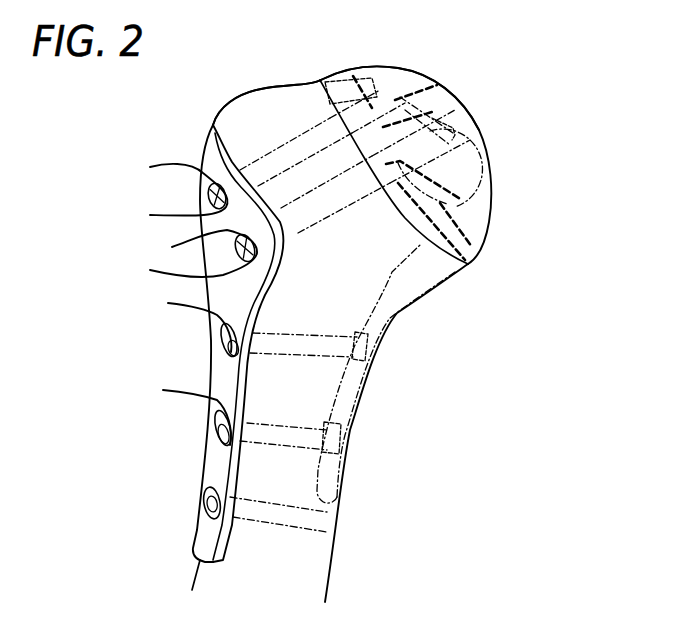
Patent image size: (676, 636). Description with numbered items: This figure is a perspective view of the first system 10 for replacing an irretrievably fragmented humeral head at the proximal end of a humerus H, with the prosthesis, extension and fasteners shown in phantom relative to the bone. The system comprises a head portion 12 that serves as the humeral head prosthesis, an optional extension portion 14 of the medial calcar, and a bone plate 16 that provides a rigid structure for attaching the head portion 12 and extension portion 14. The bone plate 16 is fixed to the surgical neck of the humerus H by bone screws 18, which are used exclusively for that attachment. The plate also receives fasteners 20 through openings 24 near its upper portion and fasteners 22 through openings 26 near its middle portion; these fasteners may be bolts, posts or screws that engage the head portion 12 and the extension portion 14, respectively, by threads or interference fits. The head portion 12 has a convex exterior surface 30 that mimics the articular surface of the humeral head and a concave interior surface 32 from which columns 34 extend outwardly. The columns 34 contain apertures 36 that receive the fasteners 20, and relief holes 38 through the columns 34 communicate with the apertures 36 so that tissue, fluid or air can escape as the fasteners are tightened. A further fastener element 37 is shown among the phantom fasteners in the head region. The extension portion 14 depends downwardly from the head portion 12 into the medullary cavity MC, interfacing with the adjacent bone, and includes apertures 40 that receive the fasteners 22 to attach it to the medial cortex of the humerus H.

The first system 10 is at (431, 69).
The head portion 12 is at (498, 174).
The extension portion 14 is at (352, 473).
The bone plate 16 is at (205, 369).
The bone screws 18 is at (210, 498).
The fasteners 20 is at (152, 215).
The fasteners 22 is at (224, 340).
The openings 24 is at (192, 218).
The openings 26 is at (183, 367).
The exterior surface 30 is at (468, 124).
The interior surface 32 is at (475, 238).
The columns 34 is at (437, 86).
The apertures 36 is at (353, 76).
The bone screw 37 is at (410, 83).
The relief holes 38 is at (395, 147).
The apertures 40 is at (370, 322).
The humerus H is at (342, 560).
The medullary cavity MC is at (299, 487).